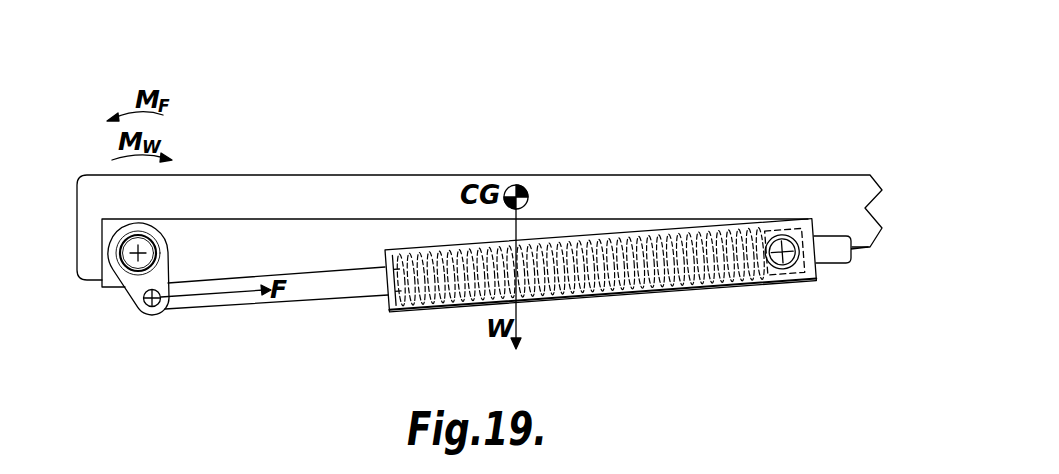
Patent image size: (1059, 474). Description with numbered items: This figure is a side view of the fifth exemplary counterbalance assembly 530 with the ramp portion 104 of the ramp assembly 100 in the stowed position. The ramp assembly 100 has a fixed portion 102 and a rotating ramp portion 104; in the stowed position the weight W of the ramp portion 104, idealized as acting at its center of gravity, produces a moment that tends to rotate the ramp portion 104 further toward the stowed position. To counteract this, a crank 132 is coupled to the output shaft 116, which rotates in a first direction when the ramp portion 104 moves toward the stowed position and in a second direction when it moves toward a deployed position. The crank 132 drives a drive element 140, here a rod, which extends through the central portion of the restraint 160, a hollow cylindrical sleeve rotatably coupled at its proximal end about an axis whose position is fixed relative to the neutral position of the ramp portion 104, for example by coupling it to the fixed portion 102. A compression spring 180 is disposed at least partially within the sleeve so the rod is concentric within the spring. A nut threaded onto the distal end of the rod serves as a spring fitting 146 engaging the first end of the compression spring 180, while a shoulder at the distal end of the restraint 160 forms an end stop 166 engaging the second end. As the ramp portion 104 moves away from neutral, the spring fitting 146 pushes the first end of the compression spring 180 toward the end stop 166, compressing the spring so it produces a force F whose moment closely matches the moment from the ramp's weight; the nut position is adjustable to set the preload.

The ramp assembly 100 is at (758, 60).
The fixed portion 102 is at (303, 218).
The ramp portion 104 is at (680, 175).
The output shaft 116 is at (128, 243).
The crank 132 is at (162, 227).
The drive element 140 is at (300, 295).
The spring fitting 146 is at (794, 232).
The restraint 160 is at (655, 297).
The end stop 166 is at (388, 308).
The compression spring 180 is at (735, 230).
The counterbalance assembly 530 is at (605, 112).